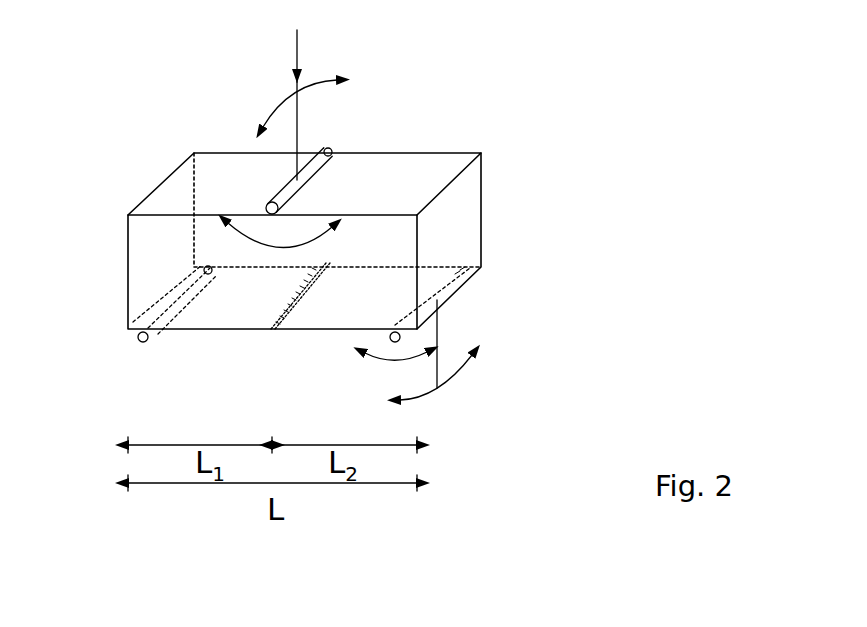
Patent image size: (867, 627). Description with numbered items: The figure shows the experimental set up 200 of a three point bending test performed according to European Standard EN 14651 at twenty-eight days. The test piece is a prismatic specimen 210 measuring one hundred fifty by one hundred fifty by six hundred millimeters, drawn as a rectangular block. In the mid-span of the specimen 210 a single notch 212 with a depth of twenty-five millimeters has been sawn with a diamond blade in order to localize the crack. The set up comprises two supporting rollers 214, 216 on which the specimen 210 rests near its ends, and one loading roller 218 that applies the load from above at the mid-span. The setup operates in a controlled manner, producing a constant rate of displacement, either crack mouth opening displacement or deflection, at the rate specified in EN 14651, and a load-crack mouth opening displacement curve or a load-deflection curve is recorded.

The experimental set up 200 is at (540, 122).
The prismatic specimen 210 is at (458, 220).
The notch 212 is at (273, 327).
The supporting roller 214 is at (143, 341).
The supporting roller 216 is at (438, 303).
The loading roller 218 is at (328, 150).